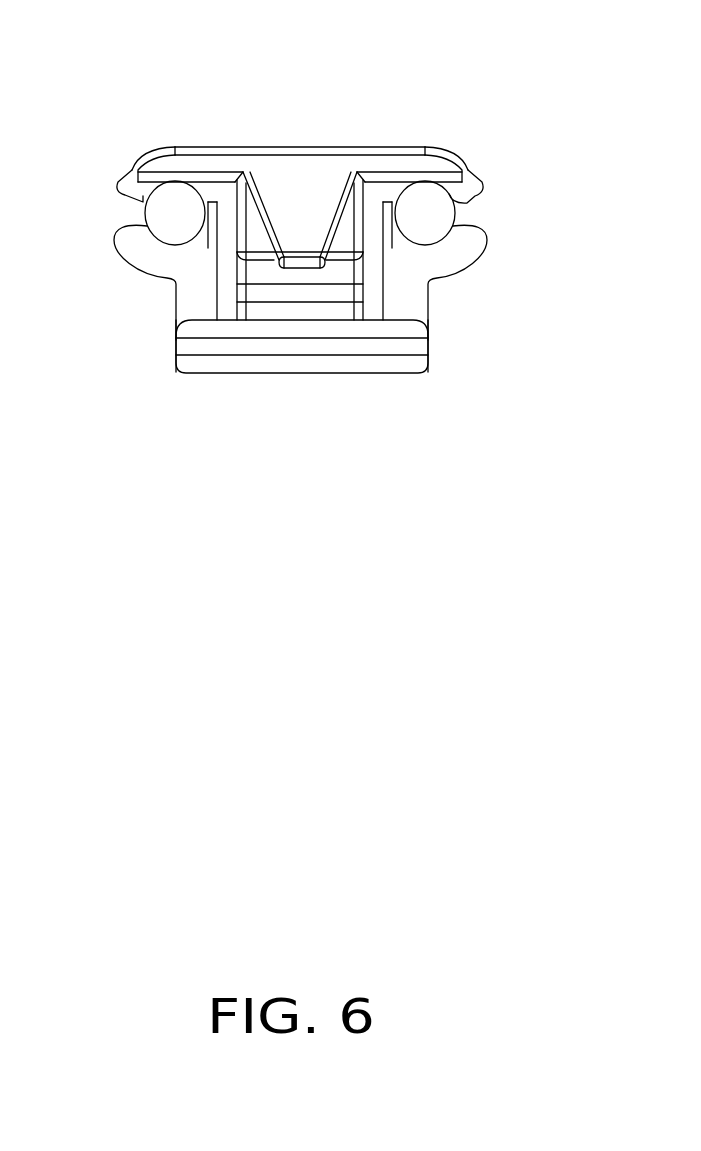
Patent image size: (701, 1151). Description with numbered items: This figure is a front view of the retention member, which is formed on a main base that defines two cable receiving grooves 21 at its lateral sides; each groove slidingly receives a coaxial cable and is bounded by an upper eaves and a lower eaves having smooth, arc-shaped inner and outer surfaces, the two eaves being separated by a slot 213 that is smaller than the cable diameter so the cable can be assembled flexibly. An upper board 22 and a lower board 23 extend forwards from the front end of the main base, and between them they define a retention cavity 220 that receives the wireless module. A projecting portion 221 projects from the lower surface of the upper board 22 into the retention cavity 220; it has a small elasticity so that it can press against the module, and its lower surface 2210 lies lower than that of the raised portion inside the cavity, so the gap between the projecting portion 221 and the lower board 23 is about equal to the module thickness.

The cable receiving groove 21 is at (422, 210).
The slot 213 is at (467, 200).
The upper board 22 is at (335, 164).
The retention cavity 220 is at (287, 293).
The projecting portion 221 is at (296, 228).
The lower surface 2210 is at (300, 268).
The lower board 23 is at (217, 345).